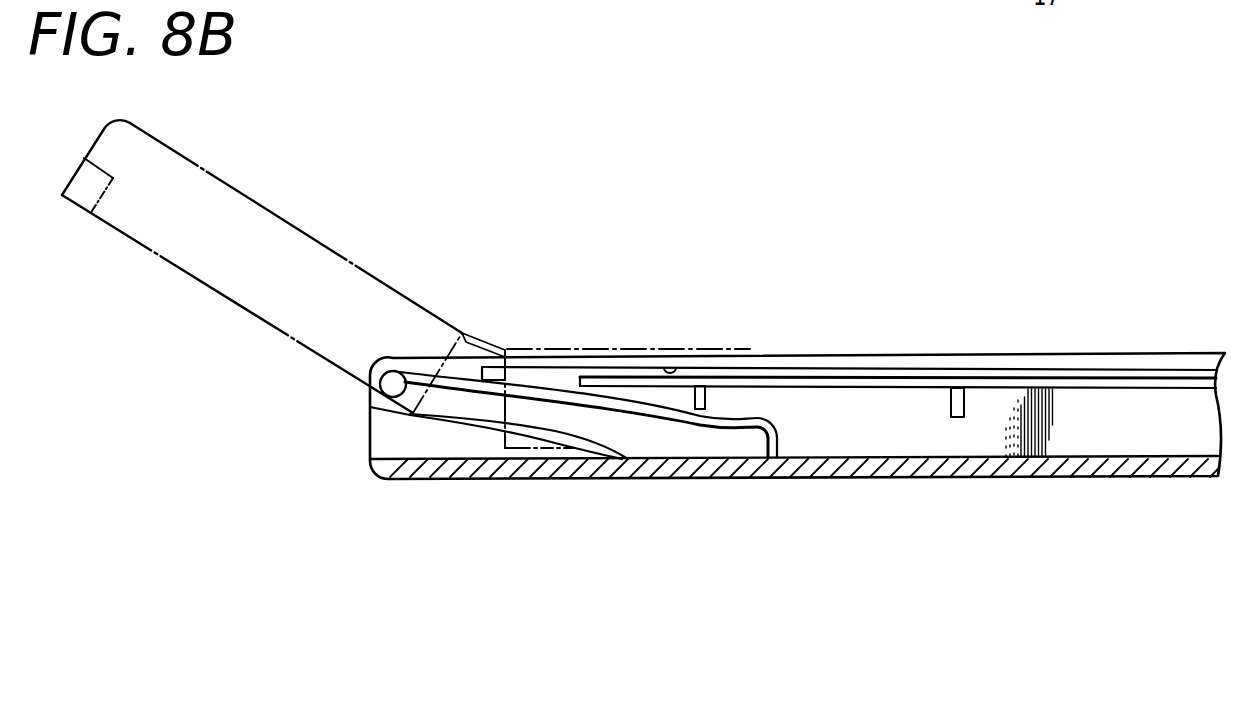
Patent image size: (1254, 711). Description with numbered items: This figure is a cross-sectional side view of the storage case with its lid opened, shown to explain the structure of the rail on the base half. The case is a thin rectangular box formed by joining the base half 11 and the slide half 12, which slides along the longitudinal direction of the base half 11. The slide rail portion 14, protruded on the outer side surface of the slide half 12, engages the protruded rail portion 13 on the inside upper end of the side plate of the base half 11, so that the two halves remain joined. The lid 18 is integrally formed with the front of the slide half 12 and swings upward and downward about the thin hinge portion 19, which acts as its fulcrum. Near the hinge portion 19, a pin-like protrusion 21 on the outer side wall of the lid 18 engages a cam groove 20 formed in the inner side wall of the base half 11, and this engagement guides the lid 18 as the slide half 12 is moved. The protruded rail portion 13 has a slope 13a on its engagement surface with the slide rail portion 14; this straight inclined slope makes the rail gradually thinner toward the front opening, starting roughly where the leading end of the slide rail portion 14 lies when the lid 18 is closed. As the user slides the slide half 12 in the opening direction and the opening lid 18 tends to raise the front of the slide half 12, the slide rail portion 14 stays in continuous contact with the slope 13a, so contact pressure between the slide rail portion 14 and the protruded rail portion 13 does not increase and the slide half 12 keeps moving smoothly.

The base half 11 is at (1038, 478).
The slide half 12 is at (599, 349).
The protruded rail portion 13 is at (1066, 367).
The slope 13a is at (672, 368).
The slide rail portion 14 is at (874, 386).
The lid 18 is at (273, 212).
The hinge portion 19 is at (477, 337).
The cam groove 20 is at (567, 433).
The pin-like protrusion 21 is at (388, 384).